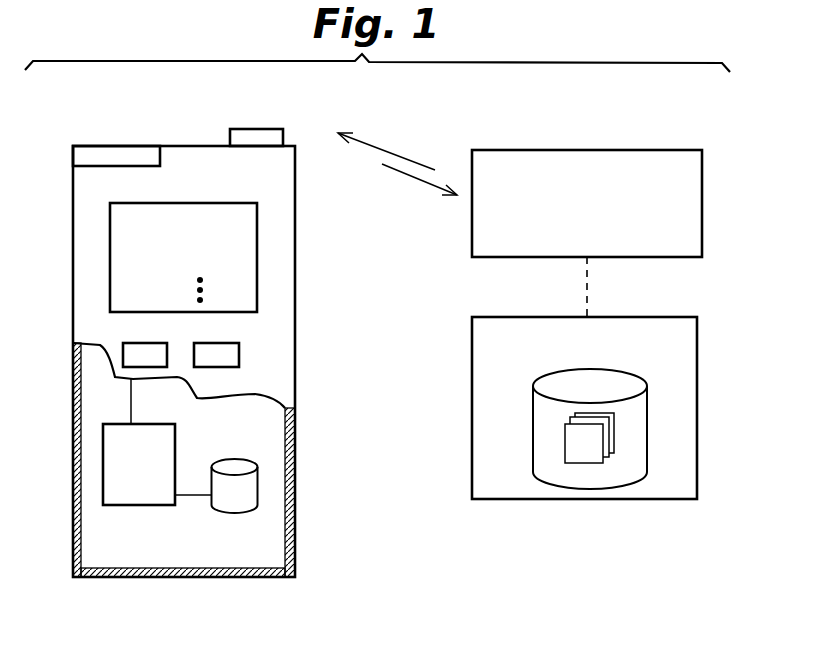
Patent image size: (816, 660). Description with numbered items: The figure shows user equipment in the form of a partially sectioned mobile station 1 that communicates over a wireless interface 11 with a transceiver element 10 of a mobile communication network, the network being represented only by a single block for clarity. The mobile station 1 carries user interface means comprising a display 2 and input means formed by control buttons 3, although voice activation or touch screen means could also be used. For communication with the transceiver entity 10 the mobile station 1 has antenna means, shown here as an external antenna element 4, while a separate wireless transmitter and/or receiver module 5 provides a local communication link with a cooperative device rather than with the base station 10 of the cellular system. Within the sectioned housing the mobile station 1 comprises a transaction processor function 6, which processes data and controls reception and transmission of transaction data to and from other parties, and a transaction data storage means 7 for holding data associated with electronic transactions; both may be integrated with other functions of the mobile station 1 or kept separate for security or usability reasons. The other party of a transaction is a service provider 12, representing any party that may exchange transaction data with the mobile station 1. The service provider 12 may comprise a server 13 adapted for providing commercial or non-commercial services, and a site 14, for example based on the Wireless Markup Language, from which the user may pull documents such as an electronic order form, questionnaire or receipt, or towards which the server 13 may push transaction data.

The mobile station 1 is at (80, 218).
The display 2 is at (128, 271).
The control buttons 3 is at (128, 352).
The external antenna element 4 is at (250, 137).
The wireless transmitter and/or receiver module 5 is at (80, 157).
The transaction processor function 6 is at (128, 465).
The transaction data storage means 7 is at (238, 505).
The transceiver element 10 is at (702, 200).
The wireless interface 11 is at (405, 158).
The service provider 12 is at (697, 413).
The server 13 is at (542, 440).
The site 14 is at (587, 464).